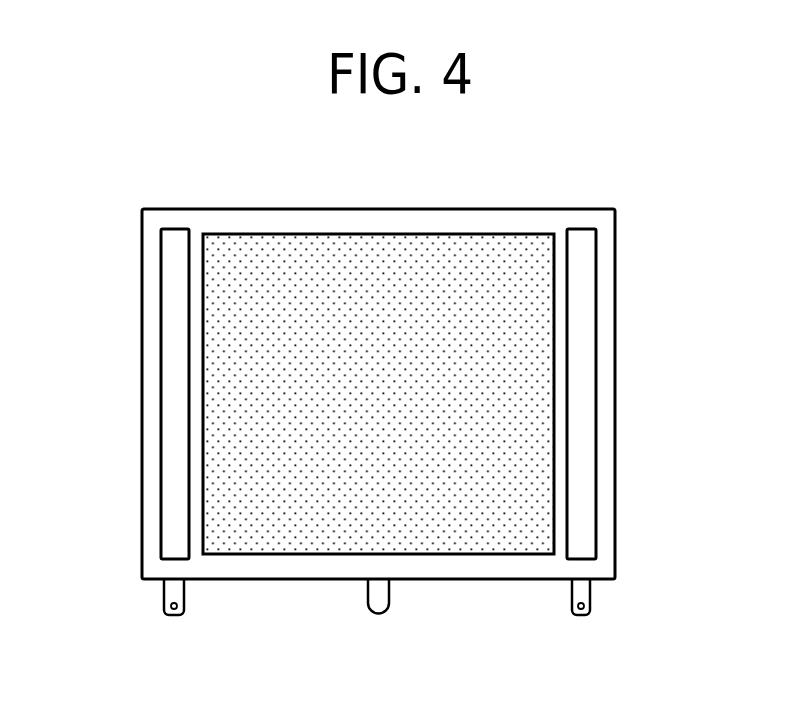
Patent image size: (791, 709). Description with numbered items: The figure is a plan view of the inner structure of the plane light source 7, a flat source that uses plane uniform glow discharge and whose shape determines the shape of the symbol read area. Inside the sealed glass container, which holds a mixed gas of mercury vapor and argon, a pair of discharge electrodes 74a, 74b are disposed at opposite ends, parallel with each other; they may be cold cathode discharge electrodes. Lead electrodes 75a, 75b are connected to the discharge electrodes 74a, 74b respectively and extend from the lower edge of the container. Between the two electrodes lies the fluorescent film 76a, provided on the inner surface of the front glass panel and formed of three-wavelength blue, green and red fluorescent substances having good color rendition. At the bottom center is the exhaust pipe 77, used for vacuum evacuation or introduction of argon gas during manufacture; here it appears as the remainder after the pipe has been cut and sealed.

The plane light source 7 is at (542, 162).
The discharge electrode 74a is at (583, 397).
The discharge electrode 74b is at (171, 389).
The lead electrode 75a is at (583, 592).
The lead electrode 75b is at (172, 593).
The fluorescent film 76a is at (292, 248).
The exhaust pipe 77 is at (378, 612).